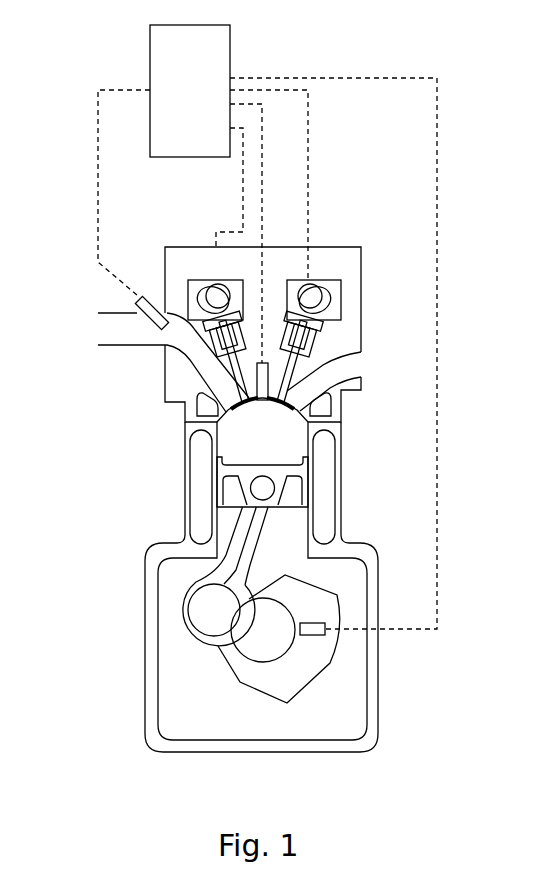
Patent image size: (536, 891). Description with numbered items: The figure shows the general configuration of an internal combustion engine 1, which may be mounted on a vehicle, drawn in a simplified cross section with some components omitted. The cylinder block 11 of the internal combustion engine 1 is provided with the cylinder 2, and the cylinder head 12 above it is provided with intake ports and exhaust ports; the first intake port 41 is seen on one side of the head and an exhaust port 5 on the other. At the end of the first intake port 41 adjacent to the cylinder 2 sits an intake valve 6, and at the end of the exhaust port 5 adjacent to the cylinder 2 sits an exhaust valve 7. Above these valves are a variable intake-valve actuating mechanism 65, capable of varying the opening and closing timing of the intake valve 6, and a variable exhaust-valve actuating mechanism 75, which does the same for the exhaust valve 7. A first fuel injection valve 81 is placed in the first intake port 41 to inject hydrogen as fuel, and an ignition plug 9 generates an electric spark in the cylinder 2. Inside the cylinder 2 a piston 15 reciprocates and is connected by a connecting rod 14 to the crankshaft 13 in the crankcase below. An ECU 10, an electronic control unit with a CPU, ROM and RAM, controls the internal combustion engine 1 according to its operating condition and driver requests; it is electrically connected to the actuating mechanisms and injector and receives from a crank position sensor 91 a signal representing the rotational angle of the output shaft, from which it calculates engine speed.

The internal combustion engine 1 is at (341, 238).
The cylinder 2 is at (243, 413).
The exhaust port 5 is at (330, 356).
The intake valve 6 is at (267, 414).
The exhaust valve 7 is at (336, 430).
The ignition plug 9 is at (271, 414).
The ECU 10 is at (178, 157).
The cylinder block 11 is at (245, 585).
The cylinder head 12 is at (163, 397).
The crankshaft 13 is at (290, 650).
The connecting rod 14 is at (252, 532).
The piston 15 is at (283, 480).
The first intake port 41 is at (205, 358).
The variable intake-valve actuating mechanism 65 is at (200, 278).
The variable exhaust-valve actuating mechanism 75 is at (335, 278).
The first fuel injection valve 81 is at (142, 318).
The crank position sensor 91 is at (322, 621).